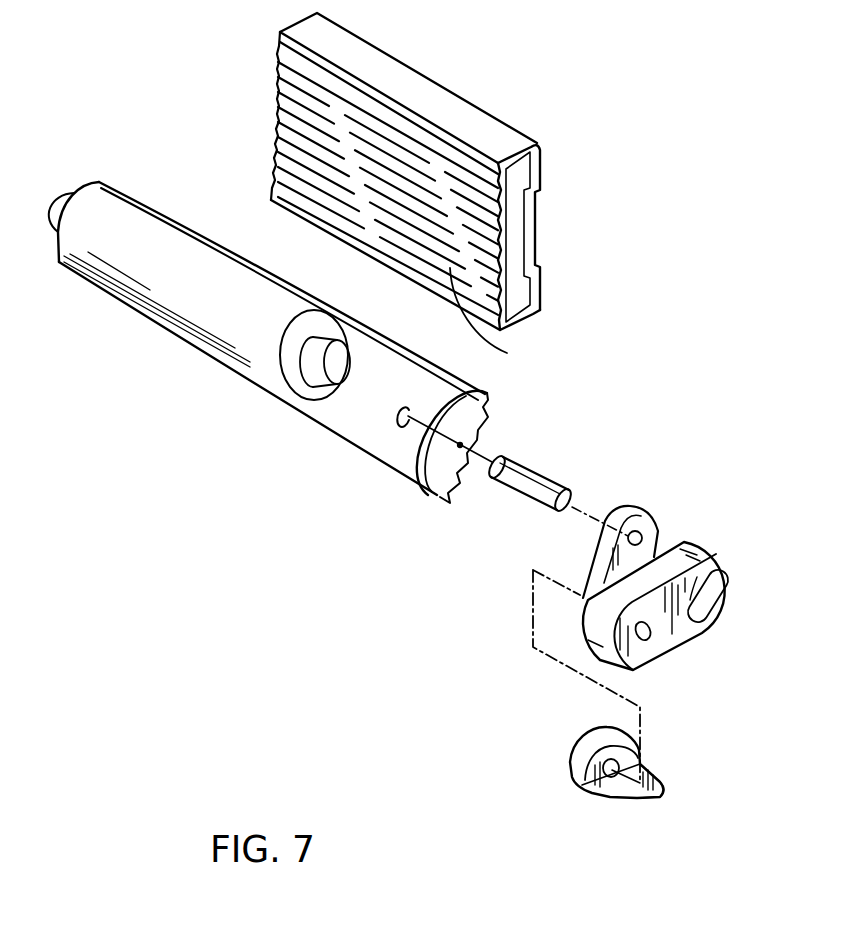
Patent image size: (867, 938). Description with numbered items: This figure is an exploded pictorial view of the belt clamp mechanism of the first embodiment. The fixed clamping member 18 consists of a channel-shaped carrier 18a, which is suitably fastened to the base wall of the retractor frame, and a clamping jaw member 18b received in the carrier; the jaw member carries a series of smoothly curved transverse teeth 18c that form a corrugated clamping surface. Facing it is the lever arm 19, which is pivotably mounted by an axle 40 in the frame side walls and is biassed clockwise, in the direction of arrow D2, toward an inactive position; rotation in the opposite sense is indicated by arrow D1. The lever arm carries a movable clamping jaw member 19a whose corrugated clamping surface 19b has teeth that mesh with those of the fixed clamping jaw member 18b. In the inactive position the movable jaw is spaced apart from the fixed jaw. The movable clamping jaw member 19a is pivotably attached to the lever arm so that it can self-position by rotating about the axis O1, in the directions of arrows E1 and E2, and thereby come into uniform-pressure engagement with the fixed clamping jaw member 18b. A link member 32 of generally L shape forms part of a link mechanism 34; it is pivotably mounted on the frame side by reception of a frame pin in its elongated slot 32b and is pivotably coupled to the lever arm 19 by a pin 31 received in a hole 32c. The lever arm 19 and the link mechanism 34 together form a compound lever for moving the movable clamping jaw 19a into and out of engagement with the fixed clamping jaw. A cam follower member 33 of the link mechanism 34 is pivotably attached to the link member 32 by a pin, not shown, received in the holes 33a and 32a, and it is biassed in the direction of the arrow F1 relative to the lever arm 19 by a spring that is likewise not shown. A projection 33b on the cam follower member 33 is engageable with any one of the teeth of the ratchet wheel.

The fixed clamping member 18 is at (480, 183).
The channel-shaped carrier 18a is at (536, 235).
The clamping jaw member 18b is at (453, 163).
The transverse teeth 18c is at (509, 317).
The lever arm 19 is at (338, 401).
The movable clamping jaw member 19a is at (488, 411).
The corrugated clamping surface 19b is at (461, 472).
The pin 31 is at (552, 480).
The link member 32 is at (691, 600).
The hole 32a is at (644, 640).
The elongated slot 32b is at (705, 600).
The hole 32c is at (641, 536).
The cam follower member 33 is at (610, 791).
The hole 33a is at (580, 788).
The projection 33b is at (662, 800).
The link mechanism 34 is at (516, 669).
The axle 40 is at (337, 362).
The arrow D1 is at (290, 300).
The arrow D2 is at (268, 299).
The arrow E1 is at (476, 371).
The arrow E2 is at (503, 379).
The arrow F1 is at (580, 722).
The axis O1 is at (459, 447).